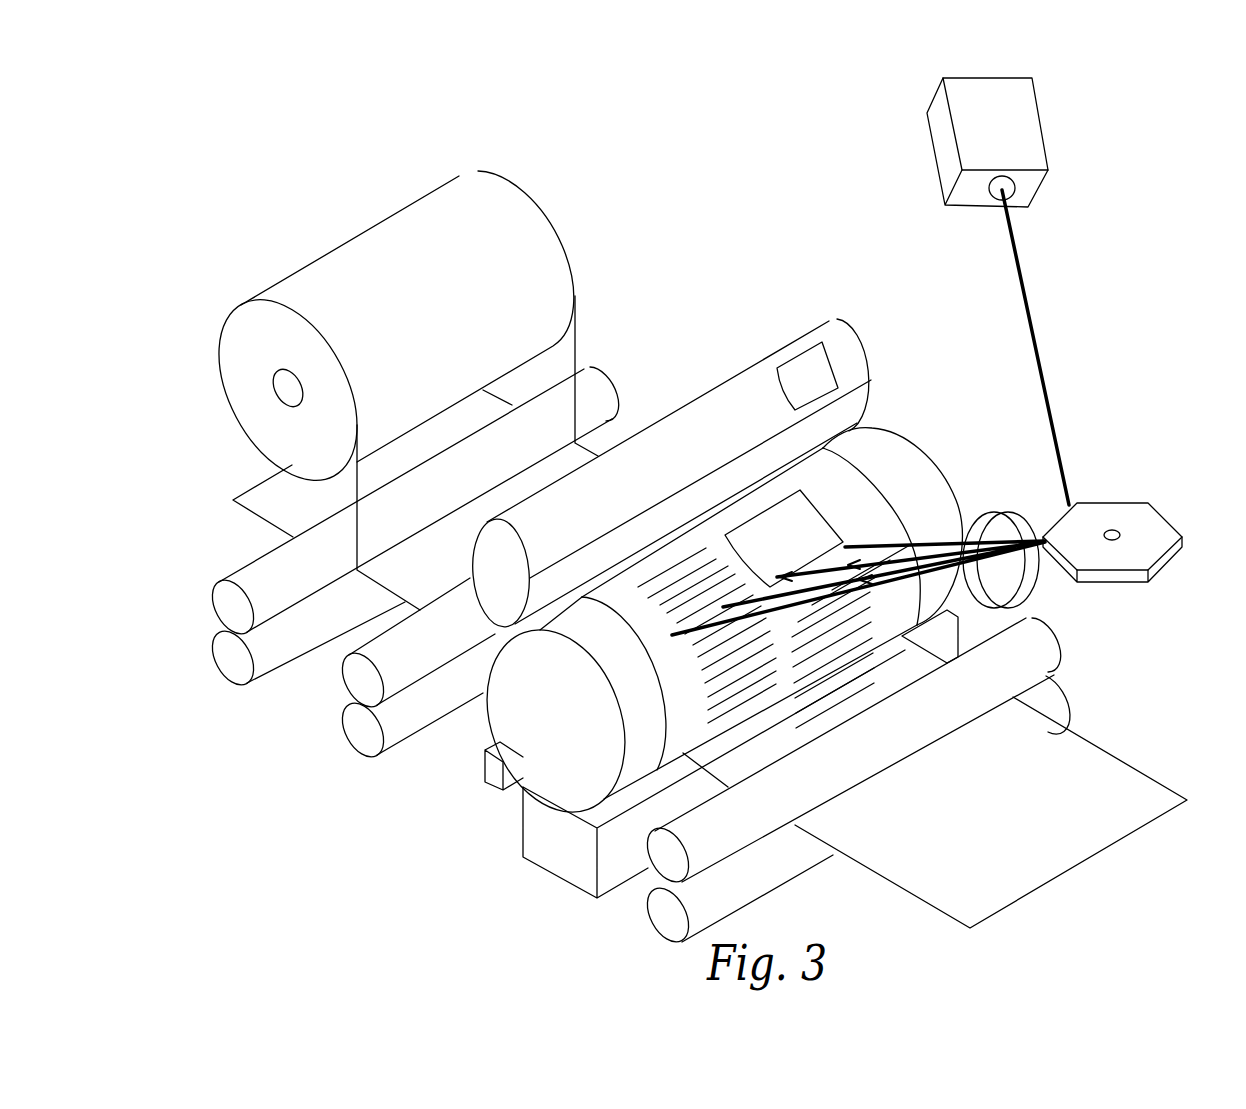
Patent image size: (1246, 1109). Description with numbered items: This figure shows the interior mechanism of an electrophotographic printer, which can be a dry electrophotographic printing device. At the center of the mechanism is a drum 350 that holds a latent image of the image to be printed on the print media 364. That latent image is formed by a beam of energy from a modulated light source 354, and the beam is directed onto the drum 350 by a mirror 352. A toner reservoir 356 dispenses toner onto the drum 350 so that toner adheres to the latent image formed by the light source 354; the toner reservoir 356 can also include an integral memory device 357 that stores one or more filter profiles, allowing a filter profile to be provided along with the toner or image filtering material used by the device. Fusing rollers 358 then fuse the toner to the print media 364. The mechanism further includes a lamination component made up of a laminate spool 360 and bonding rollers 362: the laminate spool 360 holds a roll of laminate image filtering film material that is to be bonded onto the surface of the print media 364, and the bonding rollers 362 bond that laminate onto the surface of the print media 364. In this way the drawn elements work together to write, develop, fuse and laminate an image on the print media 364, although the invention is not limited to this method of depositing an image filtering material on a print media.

The drum 350 is at (927, 457).
The mirror 352 is at (1163, 513).
The light source 354 is at (1048, 128).
The toner reservoir 356 is at (847, 330).
The integral memory device 357 is at (807, 363).
The fusing rollers 358 is at (342, 668).
The laminate spool 360 is at (540, 198).
The bonding rollers 362 is at (247, 565).
The print media 364 is at (1078, 740).